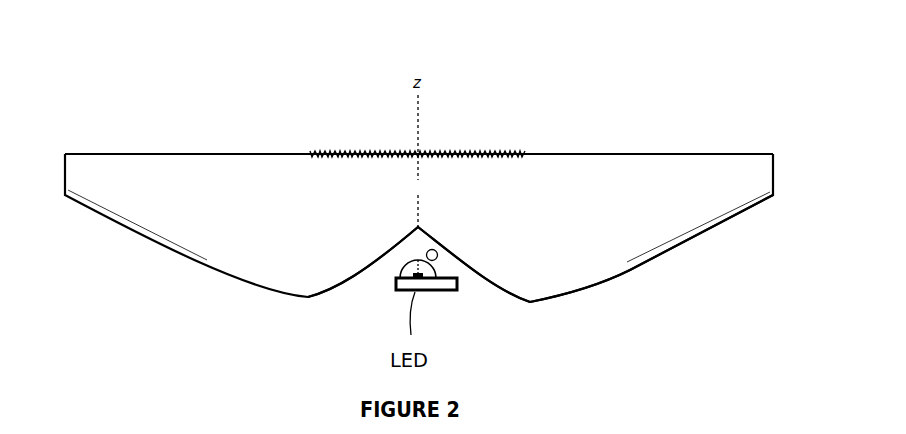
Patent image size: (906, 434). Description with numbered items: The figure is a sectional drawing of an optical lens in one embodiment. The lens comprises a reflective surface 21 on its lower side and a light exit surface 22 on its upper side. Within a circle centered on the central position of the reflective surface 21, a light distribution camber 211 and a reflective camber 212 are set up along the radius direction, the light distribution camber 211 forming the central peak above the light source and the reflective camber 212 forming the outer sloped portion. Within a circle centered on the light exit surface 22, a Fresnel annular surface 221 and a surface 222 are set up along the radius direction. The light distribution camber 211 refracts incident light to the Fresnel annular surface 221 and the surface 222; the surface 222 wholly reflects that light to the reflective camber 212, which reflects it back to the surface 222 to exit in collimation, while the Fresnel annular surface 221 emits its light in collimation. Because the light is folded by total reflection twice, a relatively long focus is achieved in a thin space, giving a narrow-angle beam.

The reflective surface 21 is at (643, 335).
The light exit surface 22 is at (294, 108).
The Fresnel annular surface 221 is at (508, 150).
The surface 222 is at (622, 150).
The light distribution camber 211 is at (383, 265).
The reflective camber 212 is at (702, 238).